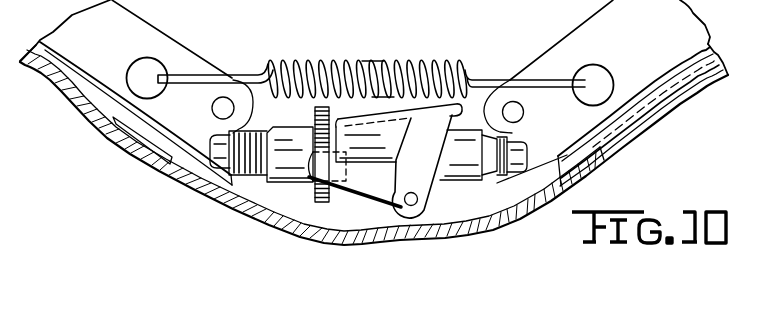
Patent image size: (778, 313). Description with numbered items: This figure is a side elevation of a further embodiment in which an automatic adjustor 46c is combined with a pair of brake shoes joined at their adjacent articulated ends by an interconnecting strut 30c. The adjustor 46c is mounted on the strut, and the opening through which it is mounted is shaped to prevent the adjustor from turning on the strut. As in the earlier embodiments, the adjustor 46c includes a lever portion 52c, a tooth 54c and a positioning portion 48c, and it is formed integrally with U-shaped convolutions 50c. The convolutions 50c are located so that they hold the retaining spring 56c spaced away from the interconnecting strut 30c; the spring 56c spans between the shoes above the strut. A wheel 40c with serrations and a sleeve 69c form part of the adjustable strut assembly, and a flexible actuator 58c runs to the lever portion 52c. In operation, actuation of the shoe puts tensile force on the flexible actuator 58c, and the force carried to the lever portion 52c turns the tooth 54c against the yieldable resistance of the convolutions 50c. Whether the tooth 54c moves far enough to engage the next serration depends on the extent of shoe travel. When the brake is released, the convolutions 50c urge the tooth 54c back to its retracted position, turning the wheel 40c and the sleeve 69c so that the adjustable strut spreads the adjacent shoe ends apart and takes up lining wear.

The interconnecting strut 30c is at (467, 182).
The wheel 40c is at (315, 112).
The automatic adjustor 46c is at (370, 190).
The positioning portion 48c is at (372, 60).
The U-shaped convolutions 50c is at (384, 76).
The lever portion 52c is at (401, 209).
The tooth 54c is at (310, 176).
The retaining spring 56c is at (326, 61).
The flexible actuator 58c is at (537, 190).
The sleeve 69c is at (304, 172).